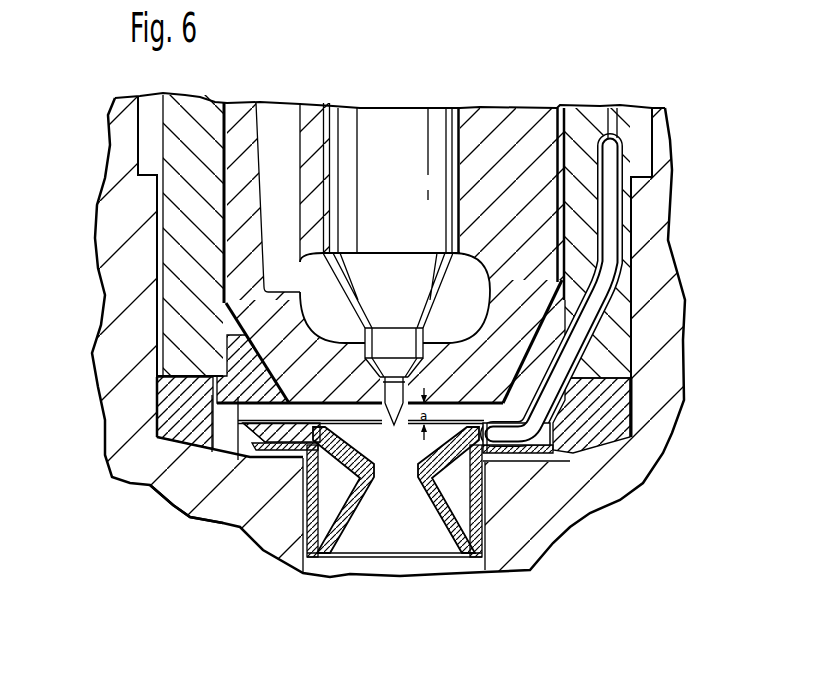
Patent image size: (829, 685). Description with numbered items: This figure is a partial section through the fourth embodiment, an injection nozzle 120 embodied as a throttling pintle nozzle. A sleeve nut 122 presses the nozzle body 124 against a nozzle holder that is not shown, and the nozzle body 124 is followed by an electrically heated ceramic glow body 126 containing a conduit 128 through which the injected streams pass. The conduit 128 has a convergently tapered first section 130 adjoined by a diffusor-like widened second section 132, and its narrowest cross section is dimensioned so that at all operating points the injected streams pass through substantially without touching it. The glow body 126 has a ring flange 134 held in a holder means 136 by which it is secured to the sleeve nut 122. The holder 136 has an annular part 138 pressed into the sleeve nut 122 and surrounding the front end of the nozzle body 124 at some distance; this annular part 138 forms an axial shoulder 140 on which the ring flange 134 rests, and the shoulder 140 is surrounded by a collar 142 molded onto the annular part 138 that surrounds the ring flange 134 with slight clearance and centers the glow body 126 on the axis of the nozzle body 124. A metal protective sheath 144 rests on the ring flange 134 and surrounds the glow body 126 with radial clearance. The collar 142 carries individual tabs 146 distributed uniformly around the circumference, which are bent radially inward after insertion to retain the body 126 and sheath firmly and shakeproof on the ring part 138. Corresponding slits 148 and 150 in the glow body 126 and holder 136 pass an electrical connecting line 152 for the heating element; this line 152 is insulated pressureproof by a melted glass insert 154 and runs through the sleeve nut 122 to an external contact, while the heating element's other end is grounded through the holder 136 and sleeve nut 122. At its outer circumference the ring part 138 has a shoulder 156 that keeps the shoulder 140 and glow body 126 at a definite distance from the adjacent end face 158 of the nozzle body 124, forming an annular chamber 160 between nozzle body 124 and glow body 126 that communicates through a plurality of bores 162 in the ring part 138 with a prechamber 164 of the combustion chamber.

The injection nozzle 120 is at (358, 100).
The sleeve nut 122 is at (587, 133).
The nozzle body 124 is at (508, 138).
The ceramic glow body 126 is at (350, 557).
The conduit 128 is at (433, 550).
The first section 130 is at (396, 490).
The second section 132 is at (394, 538).
The ring flange 134 is at (220, 490).
The holder means 136 is at (155, 438).
The annular part 138 is at (157, 388).
The axial shoulder 140 is at (233, 440).
The collar 142 is at (200, 480).
The metal protective sheath 144 is at (312, 553).
The tabs 146 is at (287, 460).
The slit 148 is at (512, 458).
The slit 150 is at (548, 435).
The electrical connecting line 152 is at (632, 388).
The melted glass insert 154 is at (601, 276).
The shoulder 156 is at (160, 353).
The end face 158 is at (352, 408).
The annular chamber 160 is at (326, 410).
The bores 162 is at (258, 410).
The prechamber 164 is at (268, 430).